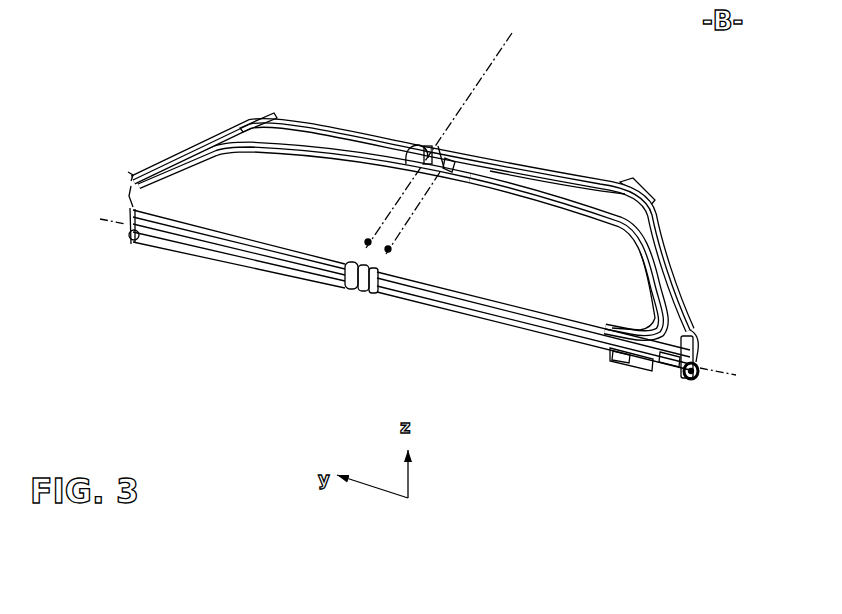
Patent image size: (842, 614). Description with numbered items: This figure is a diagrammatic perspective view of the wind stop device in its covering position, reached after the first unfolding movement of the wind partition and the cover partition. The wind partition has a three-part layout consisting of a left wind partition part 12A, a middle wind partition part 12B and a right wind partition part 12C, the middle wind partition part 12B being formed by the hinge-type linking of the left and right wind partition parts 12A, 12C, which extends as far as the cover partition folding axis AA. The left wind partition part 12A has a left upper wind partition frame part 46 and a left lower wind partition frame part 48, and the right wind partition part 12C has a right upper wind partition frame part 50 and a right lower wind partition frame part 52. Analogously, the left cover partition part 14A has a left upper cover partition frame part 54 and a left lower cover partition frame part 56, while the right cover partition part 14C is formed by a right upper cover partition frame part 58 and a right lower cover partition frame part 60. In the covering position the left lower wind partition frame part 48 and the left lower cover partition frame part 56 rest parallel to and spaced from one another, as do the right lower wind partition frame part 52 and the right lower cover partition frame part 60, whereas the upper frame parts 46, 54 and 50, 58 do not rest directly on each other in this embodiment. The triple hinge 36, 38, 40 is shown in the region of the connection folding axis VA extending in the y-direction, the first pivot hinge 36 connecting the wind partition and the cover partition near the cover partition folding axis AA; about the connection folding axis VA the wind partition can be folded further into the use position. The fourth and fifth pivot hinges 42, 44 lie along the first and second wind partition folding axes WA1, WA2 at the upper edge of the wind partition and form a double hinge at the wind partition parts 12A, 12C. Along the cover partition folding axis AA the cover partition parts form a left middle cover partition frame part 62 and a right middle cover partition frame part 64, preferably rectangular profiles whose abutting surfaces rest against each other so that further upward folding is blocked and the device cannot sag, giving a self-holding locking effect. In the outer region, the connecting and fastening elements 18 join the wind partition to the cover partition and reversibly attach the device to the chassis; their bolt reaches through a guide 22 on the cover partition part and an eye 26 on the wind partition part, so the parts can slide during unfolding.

The left wind partition part 12A is at (168, 193).
The middle wind partition part 12B is at (392, 215).
The right wind partition part 12C is at (612, 277).
The left cover partition part 14A is at (303, 138).
The right cover partition part 14C is at (523, 180).
The connecting and fastening element 18 is at (667, 375).
The guide 22 is at (693, 372).
The eye 26 is at (688, 366).
The first pivot hinge 36 is at (352, 291).
The second pivot hinge 38 is at (343, 283).
The third pivot hinge 40 is at (368, 293).
The fourth pivot hinge 42 is at (410, 150).
The fifth pivot hinge 44 is at (449, 158).
The left upper wind partition frame part 46 is at (222, 150).
The left lower wind partition frame part 48 is at (237, 240).
The right upper wind partition frame part 50 is at (582, 213).
The right lower wind partition frame part 52 is at (487, 298).
The left upper cover partition frame part 54 is at (250, 123).
The left lower cover partition frame part 56 is at (258, 262).
The right upper cover partition frame part 58 is at (565, 178).
The right lower cover partition frame part 60 is at (545, 332).
The left middle cover partition frame part 62 is at (427, 143).
The right middle cover partition frame part 64 is at (442, 144).
The first wind partition folding axis WA1 is at (366, 240).
The second wind partition folding axis WA2 is at (390, 249).
The cover partition folding axis AA is at (450, 130).
The connection folding axis VA is at (736, 377).